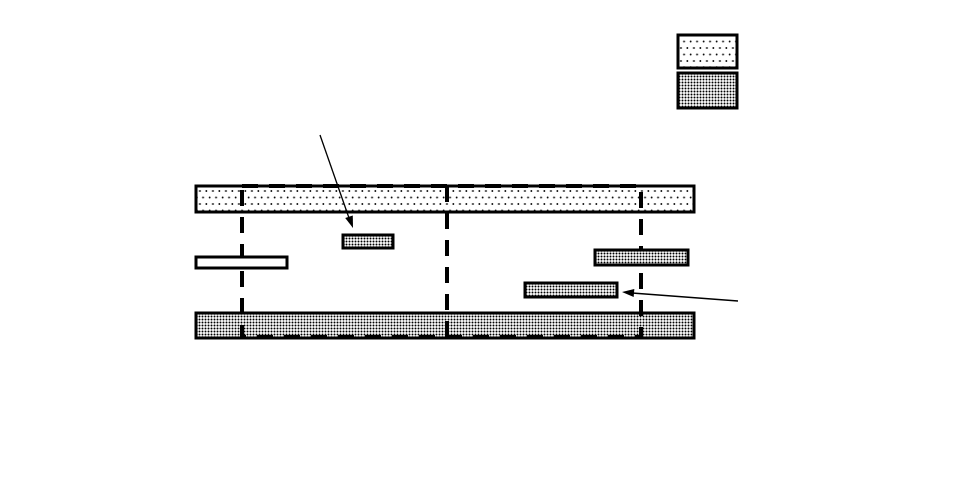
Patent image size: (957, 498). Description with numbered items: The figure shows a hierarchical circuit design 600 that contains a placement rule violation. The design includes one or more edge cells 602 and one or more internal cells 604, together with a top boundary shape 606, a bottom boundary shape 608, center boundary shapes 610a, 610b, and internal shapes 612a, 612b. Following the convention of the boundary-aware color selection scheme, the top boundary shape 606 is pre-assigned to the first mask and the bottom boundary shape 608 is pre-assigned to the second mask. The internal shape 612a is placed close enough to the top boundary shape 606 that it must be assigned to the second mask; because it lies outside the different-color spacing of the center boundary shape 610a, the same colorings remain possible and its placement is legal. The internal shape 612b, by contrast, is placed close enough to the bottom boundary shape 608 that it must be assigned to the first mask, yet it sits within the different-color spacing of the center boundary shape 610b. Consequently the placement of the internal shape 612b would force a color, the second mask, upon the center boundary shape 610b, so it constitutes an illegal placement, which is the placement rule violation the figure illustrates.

The hierarchical circuit design 600 is at (90, 100).
The edge cell 602 is at (272, 340).
The internal cell 604 is at (543, 186).
The top boundary shape 606 is at (196, 205).
The bottom boundary shape 608 is at (196, 326).
The center boundary shape 610a is at (196, 263).
The center boundary shape 610b is at (689, 254).
The internal shape 612a is at (377, 235).
The internal shape 612b is at (553, 297).